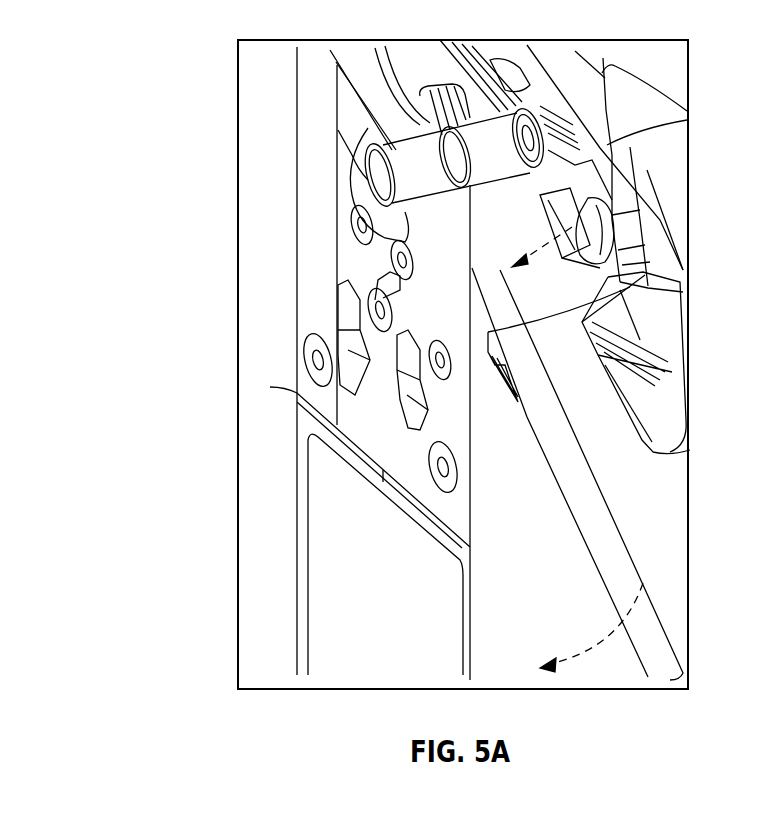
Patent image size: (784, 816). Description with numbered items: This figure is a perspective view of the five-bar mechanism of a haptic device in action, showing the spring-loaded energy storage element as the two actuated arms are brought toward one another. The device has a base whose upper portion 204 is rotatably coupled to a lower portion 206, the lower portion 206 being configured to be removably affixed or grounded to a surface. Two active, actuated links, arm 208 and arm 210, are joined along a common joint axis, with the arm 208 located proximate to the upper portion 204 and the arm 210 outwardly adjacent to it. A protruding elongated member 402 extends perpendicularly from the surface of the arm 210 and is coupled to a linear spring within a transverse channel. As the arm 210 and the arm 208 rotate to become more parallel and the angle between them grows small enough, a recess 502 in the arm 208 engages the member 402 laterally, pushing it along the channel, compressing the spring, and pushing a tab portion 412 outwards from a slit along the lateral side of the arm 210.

The upper portion 204 is at (270, 165).
The lower portion 206 is at (277, 517).
The actuated link 208 is at (628, 503).
The actuated link 210 is at (667, 165).
The protruding elongated member 402 is at (585, 208).
The tab portion 412 is at (632, 222).
The recess 502 is at (563, 265).